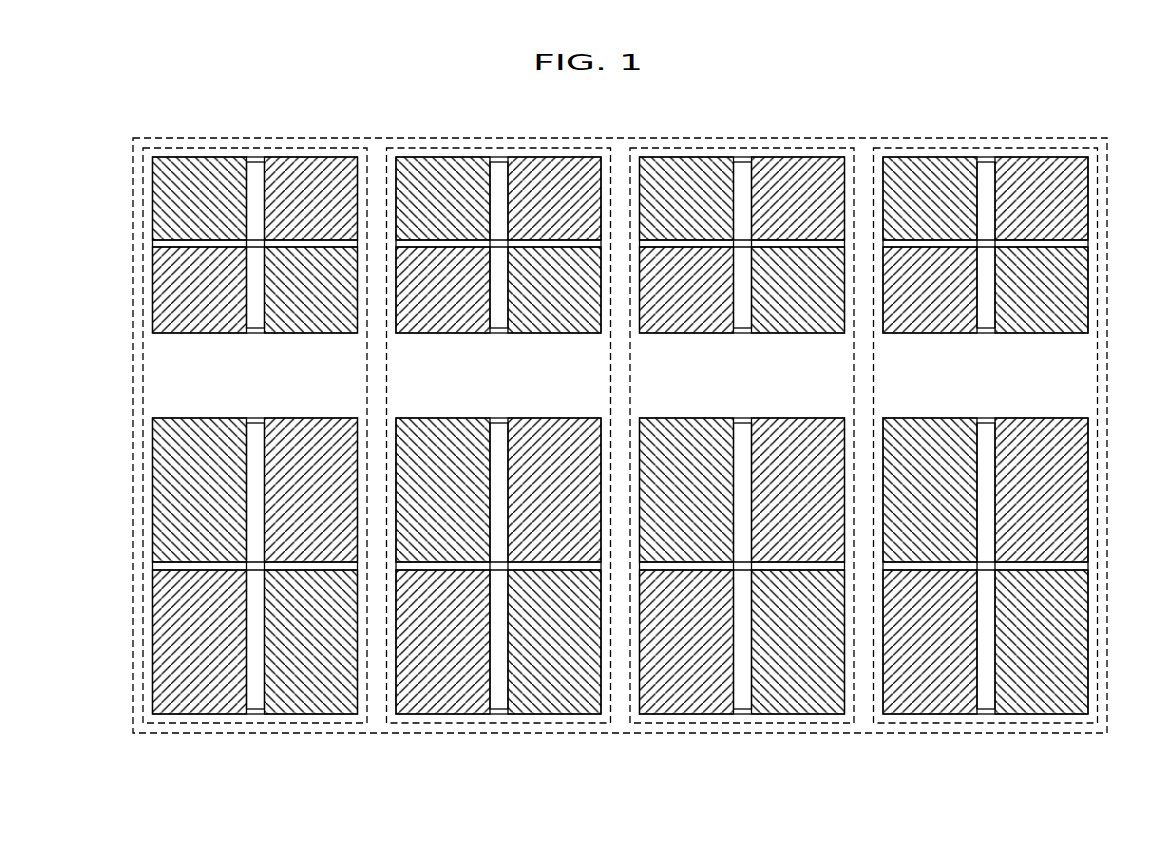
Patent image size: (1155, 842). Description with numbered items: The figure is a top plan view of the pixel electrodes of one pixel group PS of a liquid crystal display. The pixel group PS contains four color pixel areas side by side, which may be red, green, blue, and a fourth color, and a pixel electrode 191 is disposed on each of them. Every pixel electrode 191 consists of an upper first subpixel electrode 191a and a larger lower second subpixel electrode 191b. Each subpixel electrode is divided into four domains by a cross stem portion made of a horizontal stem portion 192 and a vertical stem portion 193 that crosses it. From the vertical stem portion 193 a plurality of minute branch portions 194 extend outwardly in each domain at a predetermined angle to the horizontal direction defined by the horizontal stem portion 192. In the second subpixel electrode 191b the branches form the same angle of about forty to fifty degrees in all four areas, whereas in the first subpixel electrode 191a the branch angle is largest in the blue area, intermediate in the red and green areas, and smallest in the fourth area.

The pixel electrode 191 is at (106, 79).
The first subpixel electrode 191a is at (1037, 120).
The second subpixel electrode 191b is at (1035, 750).
The horizontal stem portion 192 is at (160, 243).
The vertical stem portion 193 is at (255, 178).
The minute branch portions 194 is at (302, 178).
The pixel group PS is at (133, 167).